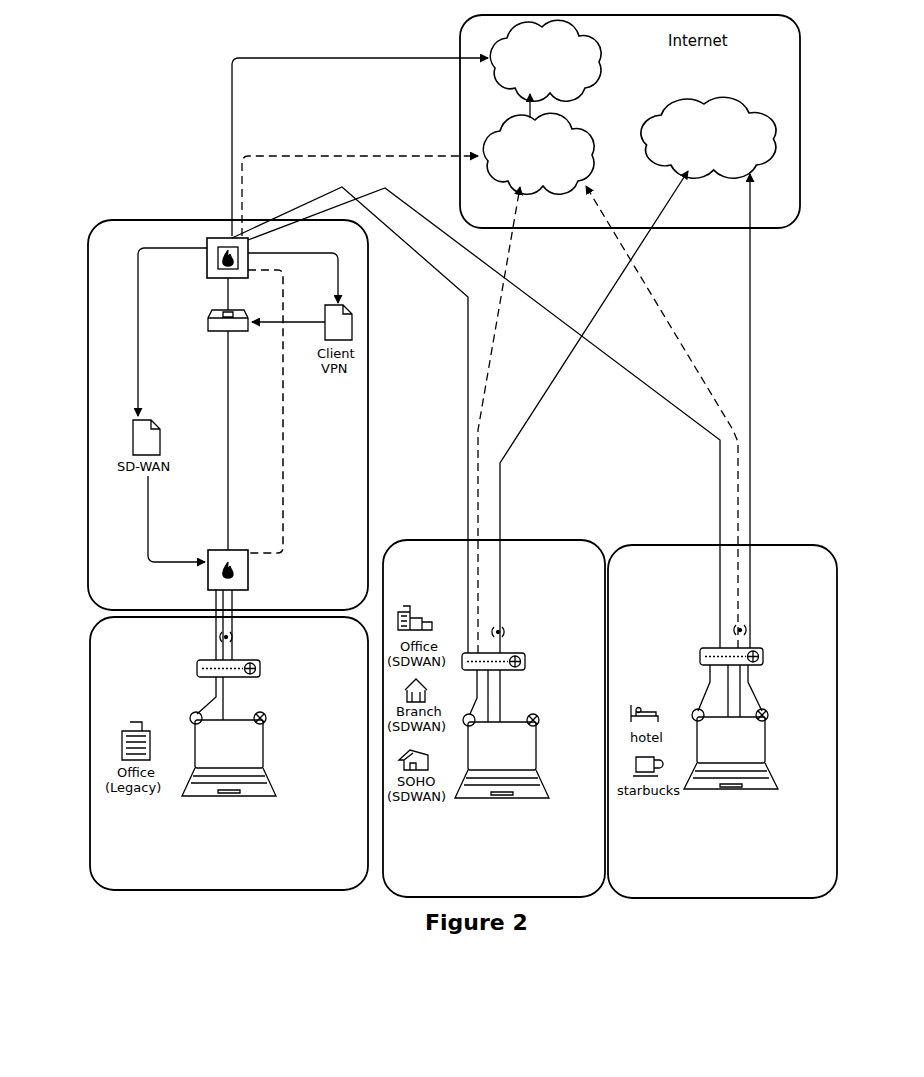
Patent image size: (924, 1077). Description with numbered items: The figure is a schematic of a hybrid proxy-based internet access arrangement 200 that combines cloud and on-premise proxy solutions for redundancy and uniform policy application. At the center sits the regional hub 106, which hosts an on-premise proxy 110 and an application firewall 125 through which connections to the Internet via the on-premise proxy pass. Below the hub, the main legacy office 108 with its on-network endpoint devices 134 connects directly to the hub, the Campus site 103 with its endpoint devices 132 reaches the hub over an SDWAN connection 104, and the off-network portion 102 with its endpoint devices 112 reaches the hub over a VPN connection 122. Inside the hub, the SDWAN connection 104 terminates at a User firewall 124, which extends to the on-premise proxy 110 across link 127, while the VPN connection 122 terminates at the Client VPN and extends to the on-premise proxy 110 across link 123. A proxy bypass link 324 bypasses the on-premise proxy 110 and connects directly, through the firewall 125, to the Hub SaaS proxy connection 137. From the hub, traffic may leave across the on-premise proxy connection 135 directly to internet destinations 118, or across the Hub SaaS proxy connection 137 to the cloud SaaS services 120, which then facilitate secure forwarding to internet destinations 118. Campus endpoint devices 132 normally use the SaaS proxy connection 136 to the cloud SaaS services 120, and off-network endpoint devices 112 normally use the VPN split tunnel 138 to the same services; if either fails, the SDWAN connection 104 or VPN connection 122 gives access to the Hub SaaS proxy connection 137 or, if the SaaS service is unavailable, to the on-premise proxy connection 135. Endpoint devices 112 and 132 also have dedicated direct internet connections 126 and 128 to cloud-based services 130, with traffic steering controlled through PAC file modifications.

The hybrid proxy-based internet access arrangement 200 is at (96, 72).
The off-network portion 102 is at (838, 745).
The Campus site 103 is at (385, 890).
The SDWAN connection 104 is at (290, 420).
The regional hub 106 is at (138, 220).
The main legacy office 108 is at (90, 745).
The on-premise proxy 110 is at (212, 333).
The endpoint devices 112 is at (731, 764).
The internet destinations 118 is at (545, 60).
The cloud SaaS services 120 is at (538, 153).
The VPN connection 122 is at (623, 397).
The link between Client VPN and on-premise proxy 123 is at (288, 312).
The User firewall 124 is at (205, 548).
The application firewall 125 is at (205, 278).
The direct internet connection 126 is at (753, 425).
The link between User firewall and on-premise proxy 127 is at (214, 414).
The direct internet connection 128 is at (503, 475).
The cloud-based services 130 is at (708, 137).
The on-network endpoint devices 132 is at (502, 769).
The on-network endpoint devices 134 is at (229, 766).
The on-premise proxy connection 135 is at (360, 134).
The SaaS proxy connection 136 is at (507, 255).
The Hub SaaS proxy connection 137 is at (360, 183).
The VPN split tunnel 138 is at (662, 315).
The proxy bypass link 324 is at (265, 411).